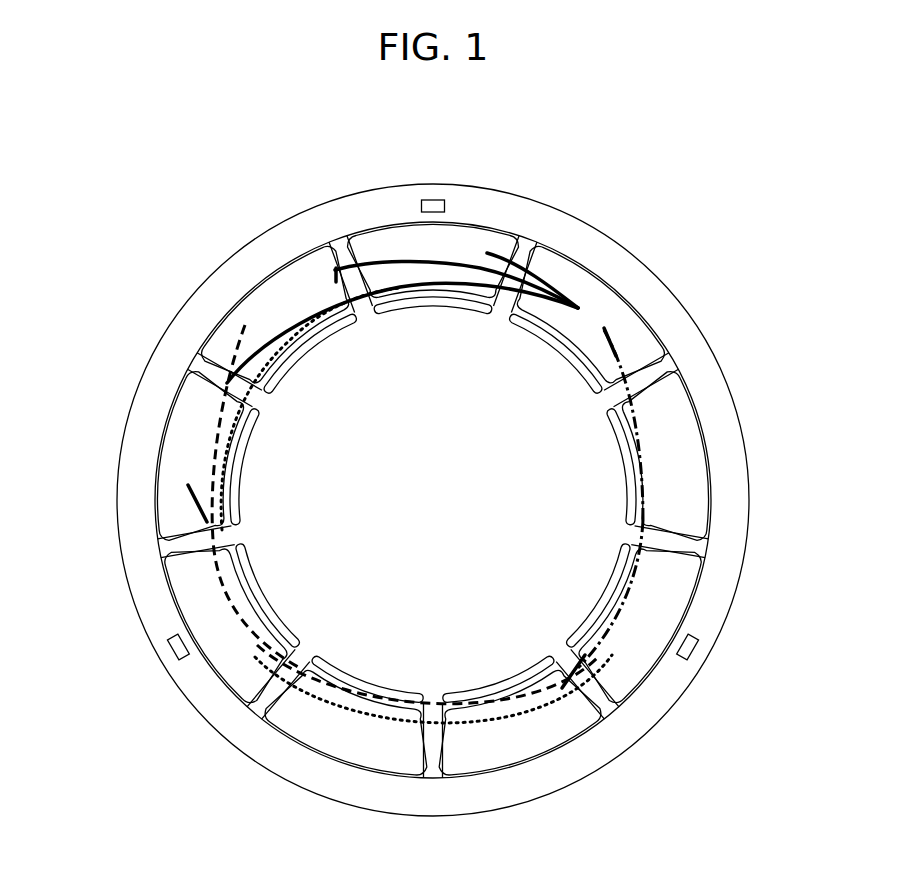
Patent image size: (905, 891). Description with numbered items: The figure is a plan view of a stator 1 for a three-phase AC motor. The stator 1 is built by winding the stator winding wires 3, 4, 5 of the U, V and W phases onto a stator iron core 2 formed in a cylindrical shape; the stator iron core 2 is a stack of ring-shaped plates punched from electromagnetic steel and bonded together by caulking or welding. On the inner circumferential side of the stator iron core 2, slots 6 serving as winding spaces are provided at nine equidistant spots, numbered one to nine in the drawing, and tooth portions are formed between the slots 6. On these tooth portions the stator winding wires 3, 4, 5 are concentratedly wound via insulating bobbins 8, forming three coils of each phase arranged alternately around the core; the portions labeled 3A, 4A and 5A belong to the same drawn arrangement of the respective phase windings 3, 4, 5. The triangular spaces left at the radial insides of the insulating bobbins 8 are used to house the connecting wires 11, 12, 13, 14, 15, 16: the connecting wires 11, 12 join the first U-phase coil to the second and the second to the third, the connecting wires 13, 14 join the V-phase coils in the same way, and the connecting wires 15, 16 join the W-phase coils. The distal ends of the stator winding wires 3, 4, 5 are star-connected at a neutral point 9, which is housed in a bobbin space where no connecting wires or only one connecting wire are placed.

The stator 1 is at (204, 155).
The stator iron core 2 is at (130, 467).
The stator winding wire 3 is at (606, 298).
The tooth / slot portion of core 3A is at (445, 283).
The stator winding wire 4 is at (700, 441).
The positioning hole 4A is at (437, 200).
The stator winding wire 5 is at (706, 648).
The tooth 5A is at (527, 288).
The slot 6 is at (437, 776).
The insulating bobbin 8 is at (305, 352).
The neutral point 9 is at (583, 303).
The connecting wire 11 is at (640, 372).
The connecting wire 12 is at (372, 690).
The connecting wire 13 is at (652, 572).
The connecting wire 14 is at (222, 446).
The connecting wire 15 is at (600, 662).
The connecting wire 16 is at (290, 368).